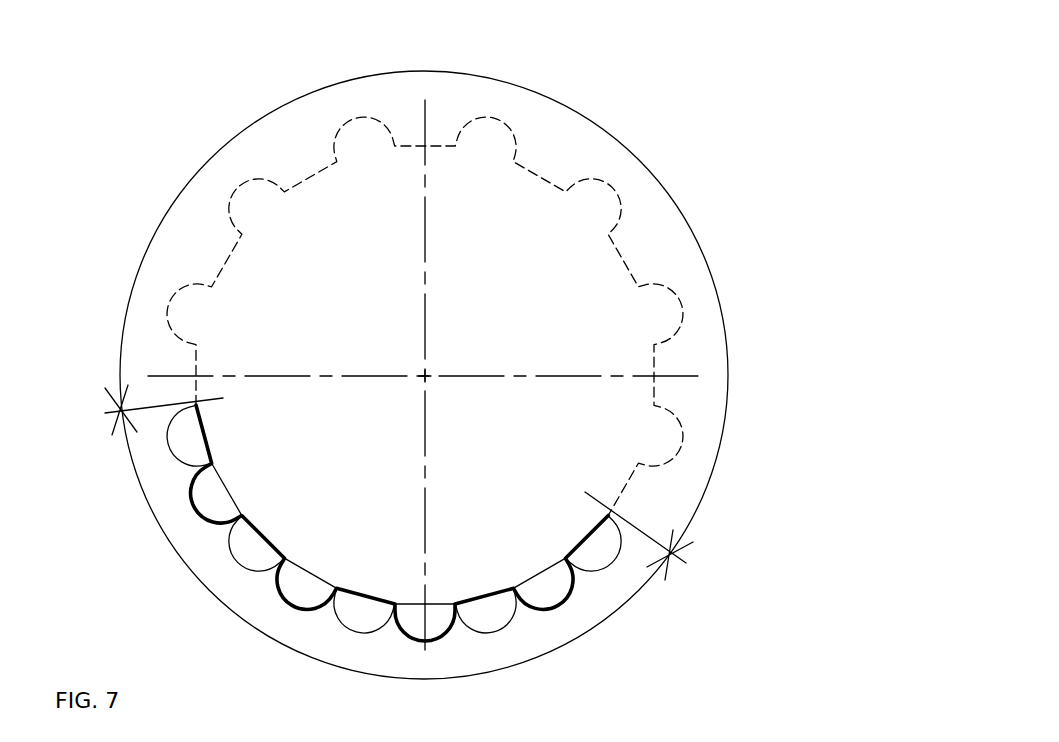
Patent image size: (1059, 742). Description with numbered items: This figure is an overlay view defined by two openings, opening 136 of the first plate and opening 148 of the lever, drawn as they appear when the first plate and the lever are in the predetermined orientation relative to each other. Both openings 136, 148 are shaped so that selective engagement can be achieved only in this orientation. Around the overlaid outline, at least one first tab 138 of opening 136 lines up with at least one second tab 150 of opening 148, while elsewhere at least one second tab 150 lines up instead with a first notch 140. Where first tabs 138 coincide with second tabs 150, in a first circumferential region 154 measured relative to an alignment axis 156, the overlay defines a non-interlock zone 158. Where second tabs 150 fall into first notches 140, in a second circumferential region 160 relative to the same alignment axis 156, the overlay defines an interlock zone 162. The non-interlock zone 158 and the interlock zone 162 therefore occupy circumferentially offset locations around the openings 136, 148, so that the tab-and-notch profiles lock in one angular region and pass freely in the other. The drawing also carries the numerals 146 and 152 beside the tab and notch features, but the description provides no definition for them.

The opening 136 is at (200, 522).
The opening 148 is at (168, 452).
The first tab 138 is at (493, 632).
The first notch 140 is at (558, 562).
The lobe 146 is at (213, 442).
The second tab 150 is at (533, 570).
The recesses of second member 152 is at (478, 613).
The first circumferential region 154 is at (673, 201).
The alignment axis 156 is at (422, 373).
The non-interlock zone 158 is at (572, 147).
The second circumferential region 160 is at (400, 678).
The interlock zone 162 is at (451, 657).